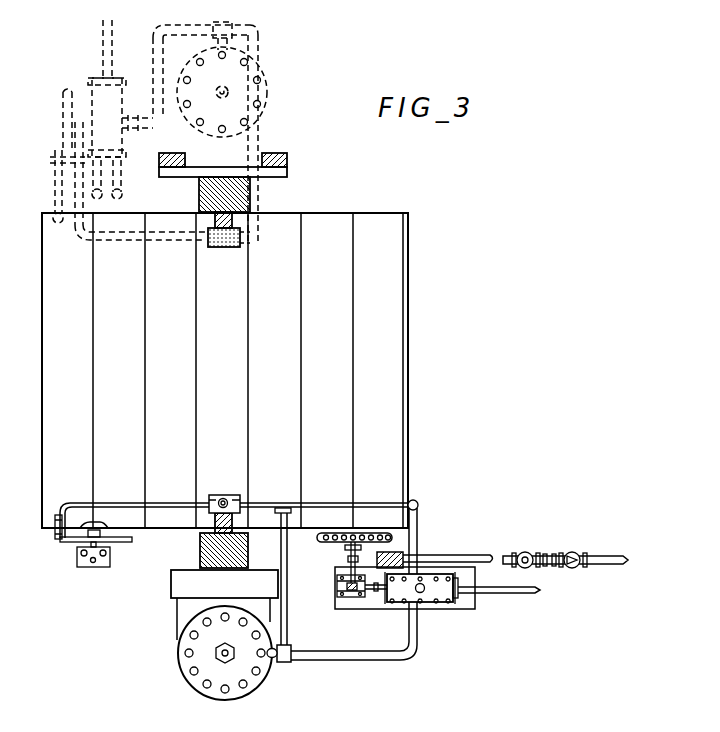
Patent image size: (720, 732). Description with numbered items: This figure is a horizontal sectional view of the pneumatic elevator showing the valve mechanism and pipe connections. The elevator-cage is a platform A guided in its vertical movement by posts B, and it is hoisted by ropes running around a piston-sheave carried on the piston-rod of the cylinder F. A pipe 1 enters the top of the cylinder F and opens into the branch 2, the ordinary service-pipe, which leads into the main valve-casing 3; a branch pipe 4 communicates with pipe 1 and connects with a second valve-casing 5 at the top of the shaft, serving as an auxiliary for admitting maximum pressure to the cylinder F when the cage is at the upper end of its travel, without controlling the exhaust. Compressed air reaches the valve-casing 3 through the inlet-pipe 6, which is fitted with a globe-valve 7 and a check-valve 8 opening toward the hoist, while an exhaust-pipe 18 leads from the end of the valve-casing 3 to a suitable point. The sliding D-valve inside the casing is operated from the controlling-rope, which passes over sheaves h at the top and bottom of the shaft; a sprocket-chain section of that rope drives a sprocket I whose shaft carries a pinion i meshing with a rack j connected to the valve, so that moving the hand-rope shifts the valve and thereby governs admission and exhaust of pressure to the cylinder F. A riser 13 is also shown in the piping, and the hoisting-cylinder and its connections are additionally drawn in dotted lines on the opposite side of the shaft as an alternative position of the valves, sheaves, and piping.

The platform A is at (225, 370).
The posts B is at (236, 207).
The cylinder F is at (178, 657).
The sheaves h is at (123, 545).
The valve-casing 5 is at (225, 495).
The sprocket I is at (328, 540).
The branch pipe 4 is at (287, 604).
The rack j is at (337, 591).
The pinion i is at (366, 592).
The pipe 1 is at (271, 662).
The branch 2 is at (355, 662).
The valve-casing 3 is at (421, 604).
The riser pipe 13 is at (418, 541).
The exhaust-pipe 18 is at (511, 591).
The check-valve 8 is at (530, 553).
The inlet-pipe 6 is at (608, 558).
The globe-valve 7 is at (574, 568).